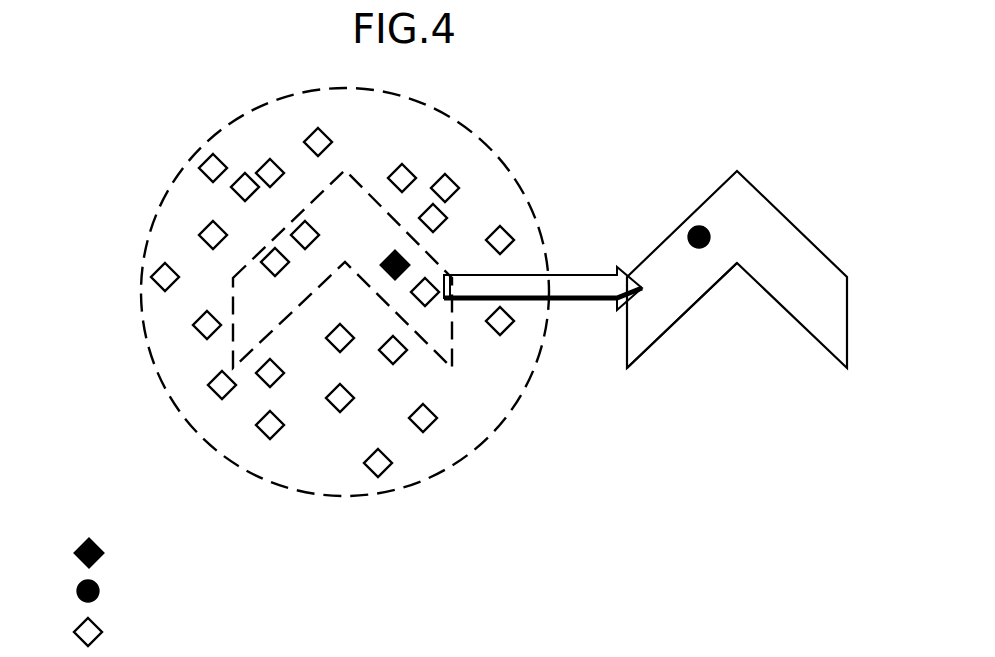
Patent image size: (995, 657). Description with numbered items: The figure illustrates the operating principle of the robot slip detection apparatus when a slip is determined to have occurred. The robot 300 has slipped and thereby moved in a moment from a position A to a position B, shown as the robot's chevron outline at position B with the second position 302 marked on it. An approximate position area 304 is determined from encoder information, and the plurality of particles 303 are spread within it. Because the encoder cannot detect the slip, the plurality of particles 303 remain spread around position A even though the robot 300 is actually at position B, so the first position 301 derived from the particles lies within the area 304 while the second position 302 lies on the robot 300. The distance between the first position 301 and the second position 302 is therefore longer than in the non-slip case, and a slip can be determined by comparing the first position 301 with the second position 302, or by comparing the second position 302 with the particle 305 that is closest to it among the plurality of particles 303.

The robot 300 is at (795, 247).
The first position 301 is at (105, 553).
The second position 302 is at (100, 591).
The plurality of particles 303 is at (103, 632).
The approximate position area 304 is at (148, 233).
The particle 305 is at (213, 384).
The position A is at (232, 297).
The position B is at (660, 338).